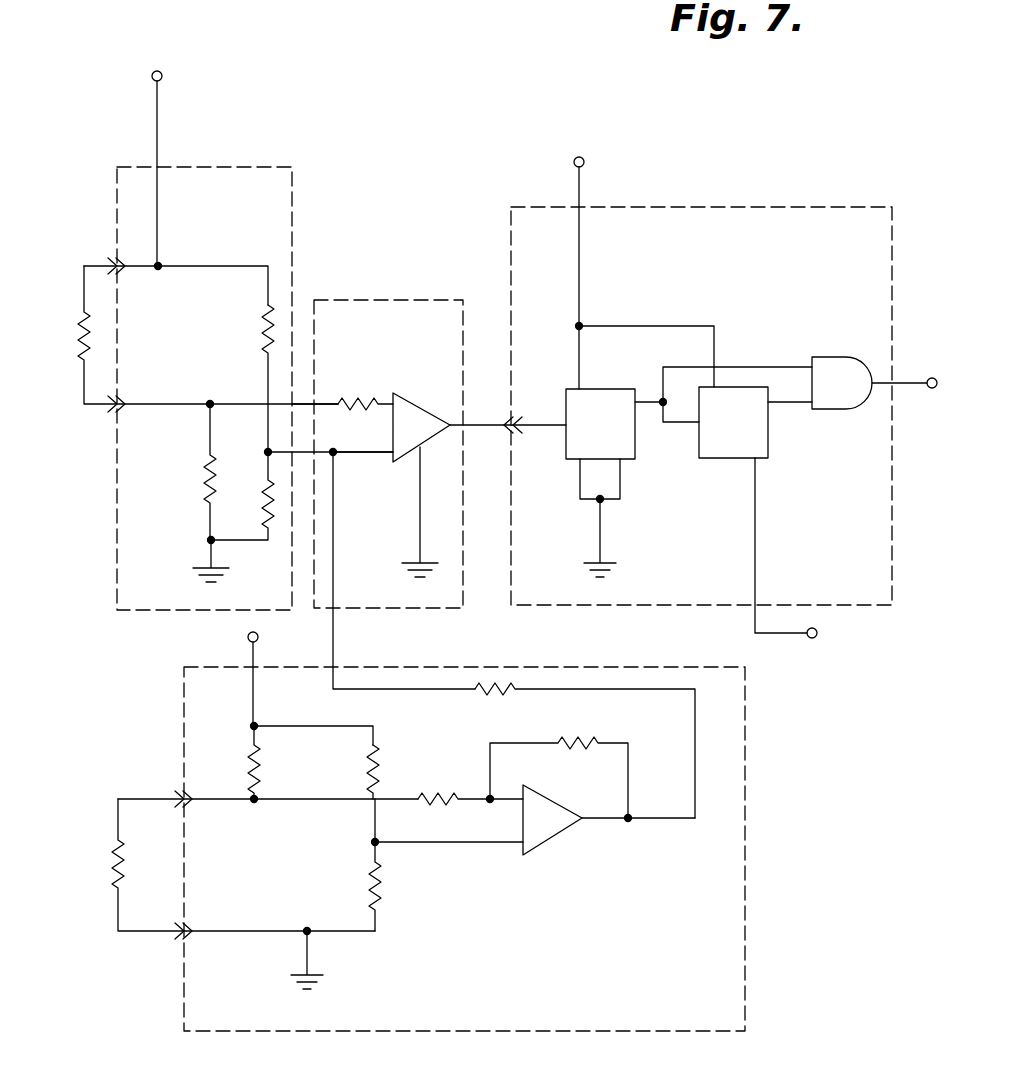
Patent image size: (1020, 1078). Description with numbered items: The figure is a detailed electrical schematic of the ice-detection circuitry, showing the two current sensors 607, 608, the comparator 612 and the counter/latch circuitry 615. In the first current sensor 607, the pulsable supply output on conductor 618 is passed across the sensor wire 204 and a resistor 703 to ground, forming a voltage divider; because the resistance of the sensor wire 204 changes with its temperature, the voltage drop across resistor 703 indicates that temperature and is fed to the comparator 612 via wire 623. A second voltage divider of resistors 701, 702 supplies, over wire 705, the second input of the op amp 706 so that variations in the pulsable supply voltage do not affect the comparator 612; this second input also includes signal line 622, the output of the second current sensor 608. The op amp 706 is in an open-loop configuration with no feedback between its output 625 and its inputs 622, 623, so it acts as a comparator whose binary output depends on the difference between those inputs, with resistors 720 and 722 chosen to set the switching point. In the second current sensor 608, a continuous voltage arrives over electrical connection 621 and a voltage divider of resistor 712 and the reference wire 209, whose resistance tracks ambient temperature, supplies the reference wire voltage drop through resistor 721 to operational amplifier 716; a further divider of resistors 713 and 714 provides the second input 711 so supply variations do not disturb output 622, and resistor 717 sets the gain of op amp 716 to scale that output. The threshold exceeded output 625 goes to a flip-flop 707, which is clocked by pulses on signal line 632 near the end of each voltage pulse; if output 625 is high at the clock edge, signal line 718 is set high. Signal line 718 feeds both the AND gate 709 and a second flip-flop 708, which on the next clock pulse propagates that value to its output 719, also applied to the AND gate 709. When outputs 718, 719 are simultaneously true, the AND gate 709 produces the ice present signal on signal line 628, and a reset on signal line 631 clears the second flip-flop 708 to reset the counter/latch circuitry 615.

The sensor wire 204 is at (82, 306).
The reference wire 209 is at (113, 856).
The current sensor 607 is at (292, 240).
The current sensor 608 is at (746, 988).
The comparator 612 is at (428, 300).
The counter/latch circuitry 615 is at (836, 207).
The conductor 618 is at (160, 112).
The electrical connection 621 is at (252, 652).
The signal line 622 is at (337, 640).
The wire 623 is at (303, 398).
The output 625 is at (470, 428).
The signal line 628 is at (905, 385).
The signal line 631 is at (772, 634).
The signal line 632 is at (582, 192).
The resistor 701 is at (262, 340).
The resistor 702 is at (262, 511).
The resistor 703 is at (214, 468).
The wire 705 is at (303, 452).
The op amp 706 is at (403, 397).
The flip-flop 707 is at (603, 389).
The second flip-flop 708 is at (770, 440).
The AND gate 709 is at (848, 357).
The second input 711 is at (452, 843).
The resistor 712 is at (258, 768).
The resistor 713 is at (378, 758).
The resistor 714 is at (380, 884).
The operational amplifier 716 is at (548, 840).
The resistor 717 is at (578, 743).
The signal line 718 is at (670, 428).
The output 719 is at (792, 403).
The resistor 720 is at (348, 400).
The resistor 721 is at (428, 800).
The resistor 722 is at (490, 688).